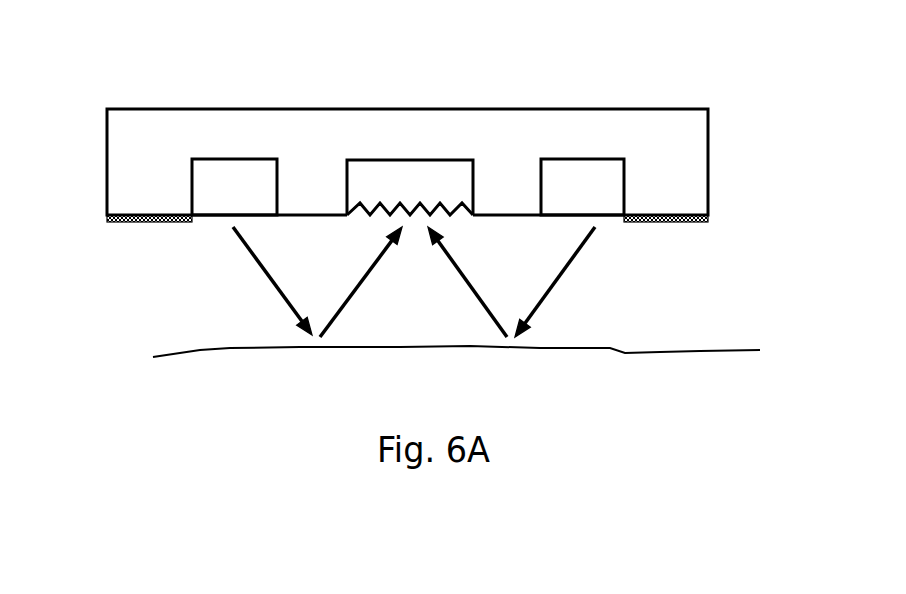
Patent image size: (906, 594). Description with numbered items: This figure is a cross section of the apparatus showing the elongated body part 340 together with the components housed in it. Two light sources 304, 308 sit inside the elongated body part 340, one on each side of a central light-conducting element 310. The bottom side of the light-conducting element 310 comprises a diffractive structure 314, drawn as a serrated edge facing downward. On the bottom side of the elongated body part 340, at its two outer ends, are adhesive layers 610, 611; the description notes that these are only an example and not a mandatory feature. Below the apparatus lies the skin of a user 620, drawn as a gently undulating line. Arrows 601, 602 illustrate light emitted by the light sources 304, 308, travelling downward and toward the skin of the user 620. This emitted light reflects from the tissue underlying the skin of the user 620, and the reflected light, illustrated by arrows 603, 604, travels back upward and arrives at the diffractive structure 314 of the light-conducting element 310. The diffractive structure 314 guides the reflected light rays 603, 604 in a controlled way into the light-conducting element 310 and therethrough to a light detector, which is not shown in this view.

The elongated body part 340 is at (138, 109).
The light source 304 is at (232, 158).
The light-conducting element 310 is at (415, 158).
The diffractive structure 314 is at (363, 206).
The light source 308 is at (587, 158).
The adhesive layer 610 is at (123, 225).
The adhesive layer 611 is at (697, 223).
The arrow 601 is at (263, 276).
The arrow 602 is at (540, 308).
The arrow 603 is at (340, 310).
The arrow 604 is at (489, 310).
The skin of a user 620 is at (175, 353).